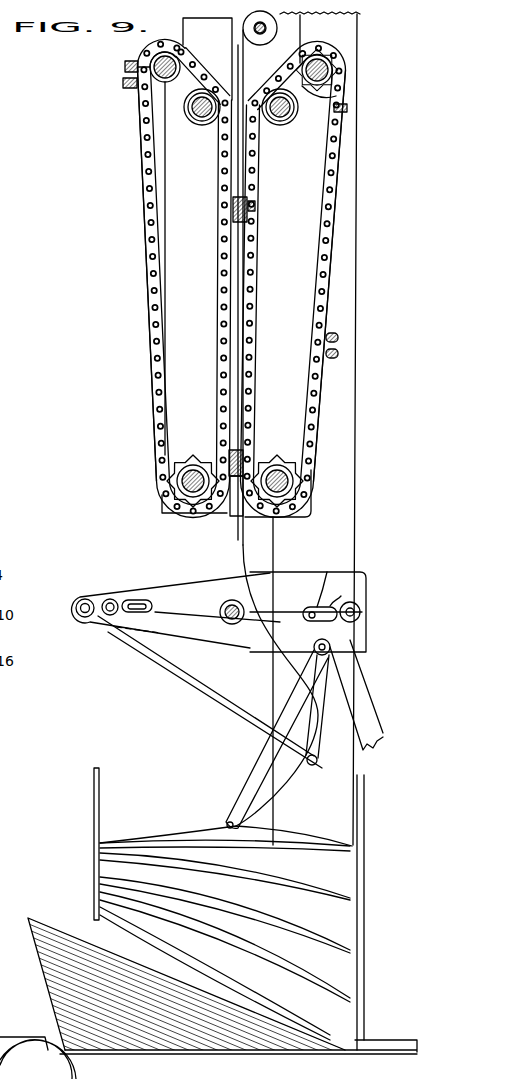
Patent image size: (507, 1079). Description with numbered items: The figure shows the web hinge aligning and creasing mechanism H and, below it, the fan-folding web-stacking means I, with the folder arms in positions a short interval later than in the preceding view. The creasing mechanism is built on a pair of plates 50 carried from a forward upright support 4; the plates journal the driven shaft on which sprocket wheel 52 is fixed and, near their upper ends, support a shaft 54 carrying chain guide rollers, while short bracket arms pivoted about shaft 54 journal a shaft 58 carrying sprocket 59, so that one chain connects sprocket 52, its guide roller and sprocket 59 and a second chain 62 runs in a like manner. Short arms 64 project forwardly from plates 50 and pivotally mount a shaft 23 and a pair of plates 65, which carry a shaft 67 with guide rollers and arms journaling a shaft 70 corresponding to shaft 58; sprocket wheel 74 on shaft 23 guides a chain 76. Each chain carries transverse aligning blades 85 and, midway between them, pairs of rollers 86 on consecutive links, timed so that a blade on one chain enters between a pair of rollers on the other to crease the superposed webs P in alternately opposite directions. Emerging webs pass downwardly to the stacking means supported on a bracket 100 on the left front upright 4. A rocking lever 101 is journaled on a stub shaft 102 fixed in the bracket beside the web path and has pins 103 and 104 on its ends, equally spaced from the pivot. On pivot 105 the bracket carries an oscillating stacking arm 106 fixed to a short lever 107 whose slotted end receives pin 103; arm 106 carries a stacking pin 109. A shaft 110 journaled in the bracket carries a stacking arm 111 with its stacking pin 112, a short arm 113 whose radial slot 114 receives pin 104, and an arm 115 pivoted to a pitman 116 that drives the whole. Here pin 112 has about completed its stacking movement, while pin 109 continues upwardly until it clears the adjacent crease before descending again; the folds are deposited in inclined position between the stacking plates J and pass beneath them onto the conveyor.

The upright support 4 is at (342, 517).
The shaft 23 is at (186, 483).
The plates 50 is at (293, 279).
The sprocket wheel 52 is at (283, 456).
The shaft 54 is at (281, 124).
The shaft 58 is at (340, 73).
The sprocket 59 is at (312, 98).
The chain 62 is at (338, 233).
The short arms 64 is at (233, 512).
The plates 65 is at (184, 278).
The shaft 67 is at (201, 122).
The shaft 70 is at (125, 67).
The sprocket wheel 74 is at (178, 460).
The chain 76 is at (146, 193).
The aligning blades 85 is at (233, 207).
The rollers 86 is at (122, 81).
The bracket 100 is at (163, 588).
The rocking lever 101 is at (266, 612).
The stub shaft 102 is at (233, 624).
The pin 103 is at (128, 603).
The pin 104 is at (326, 601).
The pivot 105 is at (107, 618).
The oscillating stacking arm 106 is at (190, 668).
The short lever 107 is at (154, 607).
The stacking pin 109 is at (317, 762).
The shaft 110 is at (360, 612).
The stacking arm 111 is at (260, 768).
The stacking pin 112 is at (214, 812).
The short arm 113 is at (311, 623).
The radial slot 114 is at (327, 572).
The arm 115 is at (356, 632).
The pitman 116 is at (368, 731).
The web hinge aligning and creasing mechanism H is at (134, 326).
The fan-folding web-stacking means I is at (151, 676).
The stacking plates J is at (84, 847).
The creased webs P is at (240, 554).